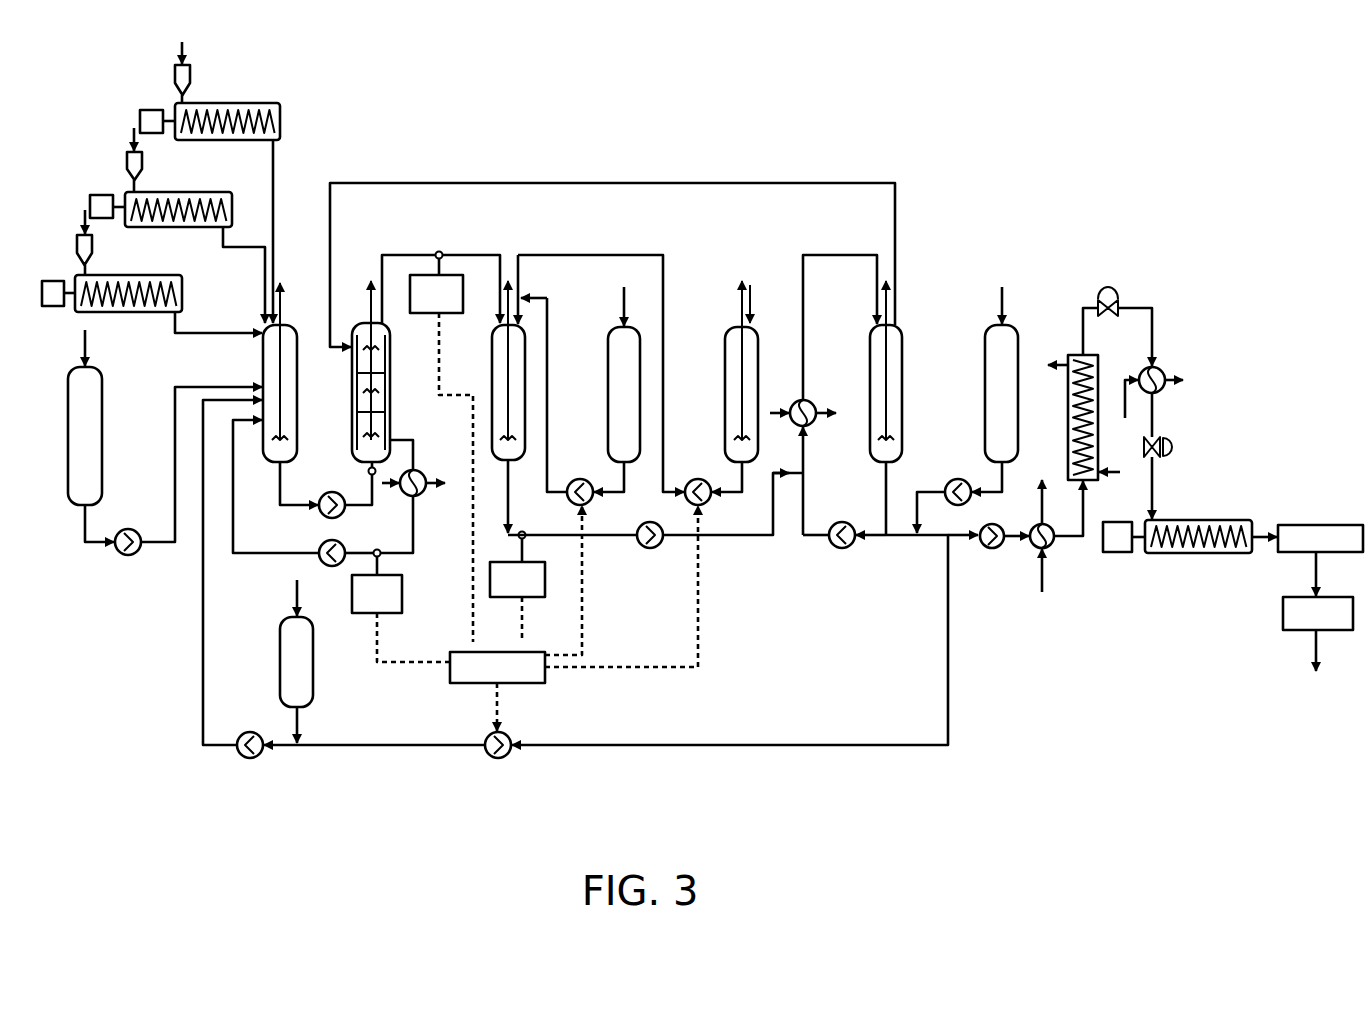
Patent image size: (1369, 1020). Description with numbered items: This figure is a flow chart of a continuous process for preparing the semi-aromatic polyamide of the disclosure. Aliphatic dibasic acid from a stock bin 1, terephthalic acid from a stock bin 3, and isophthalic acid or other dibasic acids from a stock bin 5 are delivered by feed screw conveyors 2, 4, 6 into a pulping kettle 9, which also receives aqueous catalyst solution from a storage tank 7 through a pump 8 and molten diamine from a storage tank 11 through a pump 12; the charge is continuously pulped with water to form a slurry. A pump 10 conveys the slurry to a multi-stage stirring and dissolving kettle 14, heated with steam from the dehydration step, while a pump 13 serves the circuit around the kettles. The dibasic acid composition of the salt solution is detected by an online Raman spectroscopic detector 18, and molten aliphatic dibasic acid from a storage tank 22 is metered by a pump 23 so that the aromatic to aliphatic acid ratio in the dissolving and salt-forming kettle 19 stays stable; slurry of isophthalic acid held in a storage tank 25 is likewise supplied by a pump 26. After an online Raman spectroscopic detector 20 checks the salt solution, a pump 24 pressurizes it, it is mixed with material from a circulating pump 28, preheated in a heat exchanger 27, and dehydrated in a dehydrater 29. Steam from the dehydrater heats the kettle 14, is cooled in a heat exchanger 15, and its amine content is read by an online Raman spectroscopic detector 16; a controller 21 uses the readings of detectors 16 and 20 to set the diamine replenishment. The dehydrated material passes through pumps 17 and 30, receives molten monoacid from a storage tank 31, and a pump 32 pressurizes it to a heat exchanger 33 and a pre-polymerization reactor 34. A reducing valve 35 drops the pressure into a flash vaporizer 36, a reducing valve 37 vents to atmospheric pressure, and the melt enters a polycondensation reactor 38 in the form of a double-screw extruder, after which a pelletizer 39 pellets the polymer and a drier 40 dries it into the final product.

The stock bin of aliphatic dibasic acid 1 is at (173, 72).
The feed screw conveyor 2 is at (210, 201).
The stock bin of terephthalic acid 3 is at (126, 160).
The feed screw conveyor 4 is at (177, 245).
The stock bin of isophthalic acid 5 is at (74, 242).
The feed screw conveyor 6 is at (152, 292).
The storage tank of the aqueous solution of catalyst(s) 7 is at (79, 436).
The pump 8 is at (188, 487).
The pulping kettle 9 is at (290, 394).
The pump 10 is at (347, 490).
The storage tank of molten diamine 11 is at (281, 661).
The pump 12 is at (233, 593).
The pump 13 is at (303, 510).
The multi-stage stirring and dissolving kettle 14 is at (612, 326).
The heat exchanger 15 is at (415, 511).
The online Raman spectroscopic detector 16 is at (401, 606).
The pump 17 is at (387, 759).
The online Raman spectroscopic detector 18 is at (451, 286).
The dissolving and salt-forming kettle 19 is at (462, 477).
The online Raman spectroscopic detector 20 is at (532, 586).
The controller 21 is at (574, 618).
The storage tank of molten aliphatic dibasic acid 22 is at (607, 389).
The pump 23 is at (570, 401).
The pump 24 is at (655, 528).
The storage tank of the slurry of isophthalic acid 25 is at (725, 386).
The pump 26 is at (614, 380).
The heat exchanger 27 is at (823, 395).
The pump 28 is at (844, 552).
The dehydrater 29 is at (745, 513).
The pump 30 is at (944, 491).
The storage tank of molten monoacid 31 is at (986, 389).
The pump 32 is at (1004, 553).
The heat exchanger 33 is at (1056, 536).
The pre-polymerization reactor 34 is at (1077, 394).
The reducing valve 35 is at (1123, 309).
The flash vaporizer 36 is at (1160, 390).
The reducing valve 37 is at (1177, 478).
The polycondensation reactor 38 is at (1190, 553).
The pelletizer 39 is at (1320, 545).
The drier 40 is at (1298, 650).